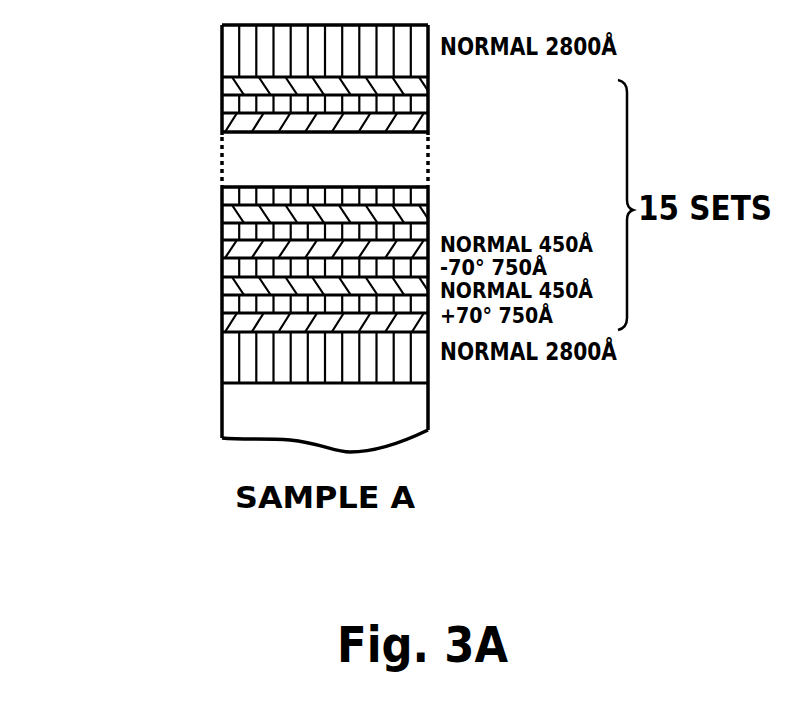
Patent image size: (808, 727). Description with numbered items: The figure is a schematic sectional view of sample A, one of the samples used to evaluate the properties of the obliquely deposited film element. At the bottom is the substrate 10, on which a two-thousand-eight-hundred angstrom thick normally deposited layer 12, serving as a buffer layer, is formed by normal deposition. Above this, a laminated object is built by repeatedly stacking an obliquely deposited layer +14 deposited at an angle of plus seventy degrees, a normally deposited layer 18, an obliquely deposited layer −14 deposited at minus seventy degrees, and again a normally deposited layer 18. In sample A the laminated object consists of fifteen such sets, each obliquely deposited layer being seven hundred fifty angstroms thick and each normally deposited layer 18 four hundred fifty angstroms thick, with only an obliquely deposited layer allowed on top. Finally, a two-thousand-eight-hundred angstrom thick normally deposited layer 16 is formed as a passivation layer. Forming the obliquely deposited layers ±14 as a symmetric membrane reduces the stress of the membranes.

The substrate 10 is at (228, 414).
The normally deposited layer (buffer layer) 12 is at (228, 360).
The obliquely deposited layer 14 is at (228, 89).
The normally deposited layer (passivation layer) 16 is at (228, 46).
The normally deposited layer 18 is at (228, 301).